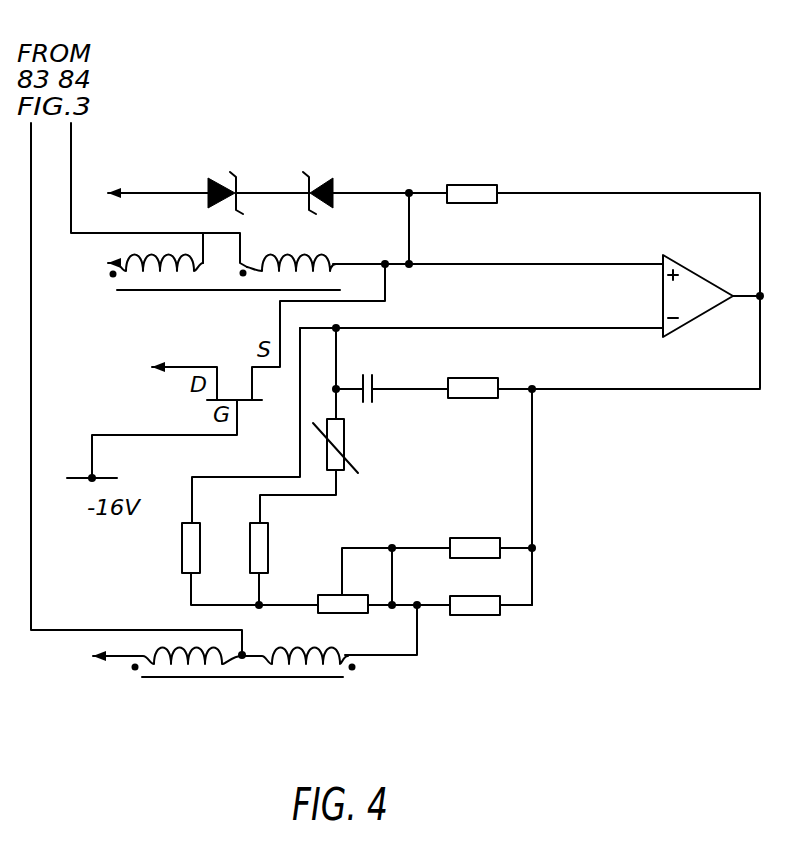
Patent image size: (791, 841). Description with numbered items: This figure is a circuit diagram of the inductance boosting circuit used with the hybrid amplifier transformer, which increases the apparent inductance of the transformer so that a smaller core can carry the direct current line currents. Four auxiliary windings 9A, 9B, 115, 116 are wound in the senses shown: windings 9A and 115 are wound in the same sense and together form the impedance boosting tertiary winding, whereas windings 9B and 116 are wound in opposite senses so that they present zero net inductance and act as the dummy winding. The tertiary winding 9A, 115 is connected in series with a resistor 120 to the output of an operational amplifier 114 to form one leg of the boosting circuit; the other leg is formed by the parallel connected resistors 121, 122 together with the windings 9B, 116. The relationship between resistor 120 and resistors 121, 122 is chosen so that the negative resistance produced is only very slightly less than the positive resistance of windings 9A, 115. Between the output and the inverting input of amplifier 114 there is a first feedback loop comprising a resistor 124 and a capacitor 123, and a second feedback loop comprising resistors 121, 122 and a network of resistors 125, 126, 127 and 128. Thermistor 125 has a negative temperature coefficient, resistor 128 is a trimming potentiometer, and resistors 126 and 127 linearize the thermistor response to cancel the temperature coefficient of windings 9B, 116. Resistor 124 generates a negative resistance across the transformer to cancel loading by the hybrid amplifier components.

The auxiliary transformer winding 9A is at (224, 290).
The auxiliary transformer winding 9B is at (218, 681).
The operational amplifier 114 is at (693, 287).
The auxiliary transformer winding 115 is at (287, 258).
The auxiliary transformer winding 116 is at (308, 666).
The resistor 120 is at (477, 185).
The resistor 121 is at (473, 543).
The resistor 122 is at (473, 615).
The capacitor 123 is at (378, 380).
The resistor 124 is at (475, 392).
The thermistor 125 is at (345, 432).
The resistor 126 is at (268, 552).
The resistor 127 is at (182, 552).
The trimming potentiometer 128 is at (345, 605).